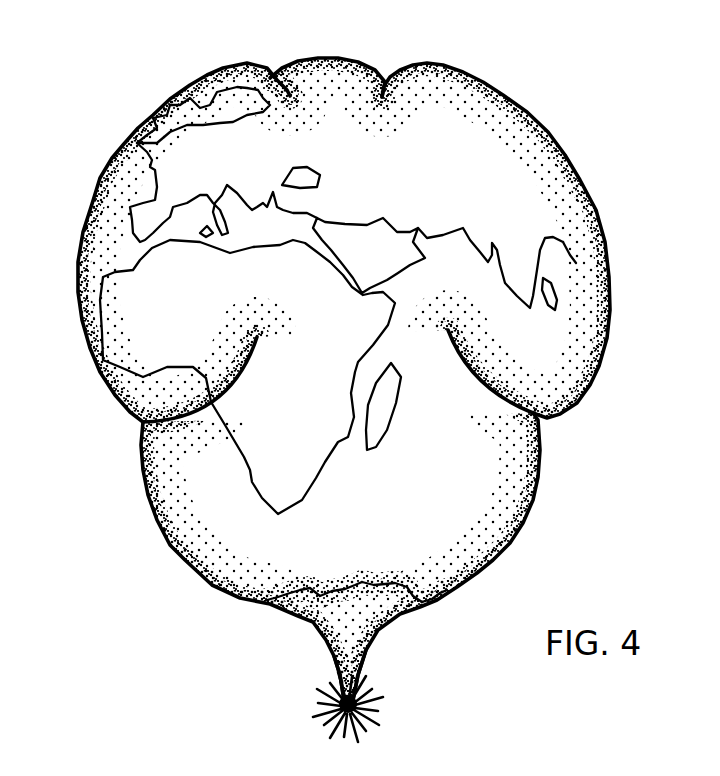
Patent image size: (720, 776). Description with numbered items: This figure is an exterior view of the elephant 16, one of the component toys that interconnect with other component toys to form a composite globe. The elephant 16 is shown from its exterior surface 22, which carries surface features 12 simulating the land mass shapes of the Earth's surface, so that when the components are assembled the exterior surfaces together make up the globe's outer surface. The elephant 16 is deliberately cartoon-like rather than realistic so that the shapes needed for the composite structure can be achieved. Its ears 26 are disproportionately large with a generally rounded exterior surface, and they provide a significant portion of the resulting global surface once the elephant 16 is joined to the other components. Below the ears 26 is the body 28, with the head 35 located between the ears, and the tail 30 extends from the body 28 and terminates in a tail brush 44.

The surface features 12 is at (311, 329).
The elephant 16 is at (84, 493).
The exterior surface 22 is at (405, 504).
The ears 26 is at (112, 226).
The body 28 is at (185, 556).
The tail 30 is at (313, 626).
The head 35 is at (333, 118).
The tail brush 44 is at (383, 694).